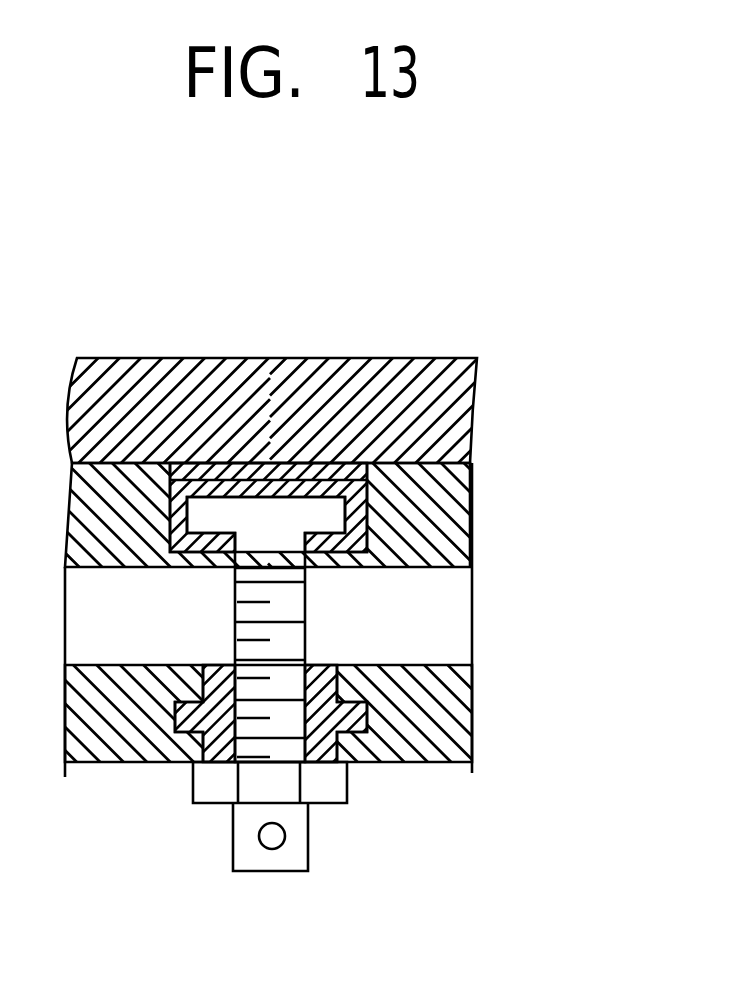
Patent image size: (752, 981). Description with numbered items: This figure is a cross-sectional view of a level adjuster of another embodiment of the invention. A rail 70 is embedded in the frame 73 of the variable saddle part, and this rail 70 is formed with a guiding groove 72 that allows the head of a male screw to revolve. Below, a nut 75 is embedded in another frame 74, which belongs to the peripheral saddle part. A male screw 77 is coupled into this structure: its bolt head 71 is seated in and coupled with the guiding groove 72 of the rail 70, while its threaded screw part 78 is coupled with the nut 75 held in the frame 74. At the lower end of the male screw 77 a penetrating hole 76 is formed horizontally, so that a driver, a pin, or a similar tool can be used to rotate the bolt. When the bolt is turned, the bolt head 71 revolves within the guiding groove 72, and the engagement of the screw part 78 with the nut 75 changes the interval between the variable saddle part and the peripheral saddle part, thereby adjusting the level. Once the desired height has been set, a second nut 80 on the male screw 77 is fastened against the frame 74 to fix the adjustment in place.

The rail 70 is at (276, 492).
The bolt head 71 is at (320, 516).
The guiding groove 72 is at (345, 512).
The frame of the variable saddle part 73 is at (130, 478).
The frame of the peripheral saddle part 74 is at (450, 730).
The nut 75 is at (367, 707).
The penetrating hole 76 is at (285, 835).
The male screw 77 is at (270, 857).
The screw part 78 is at (273, 627).
The nut 80 is at (205, 768).